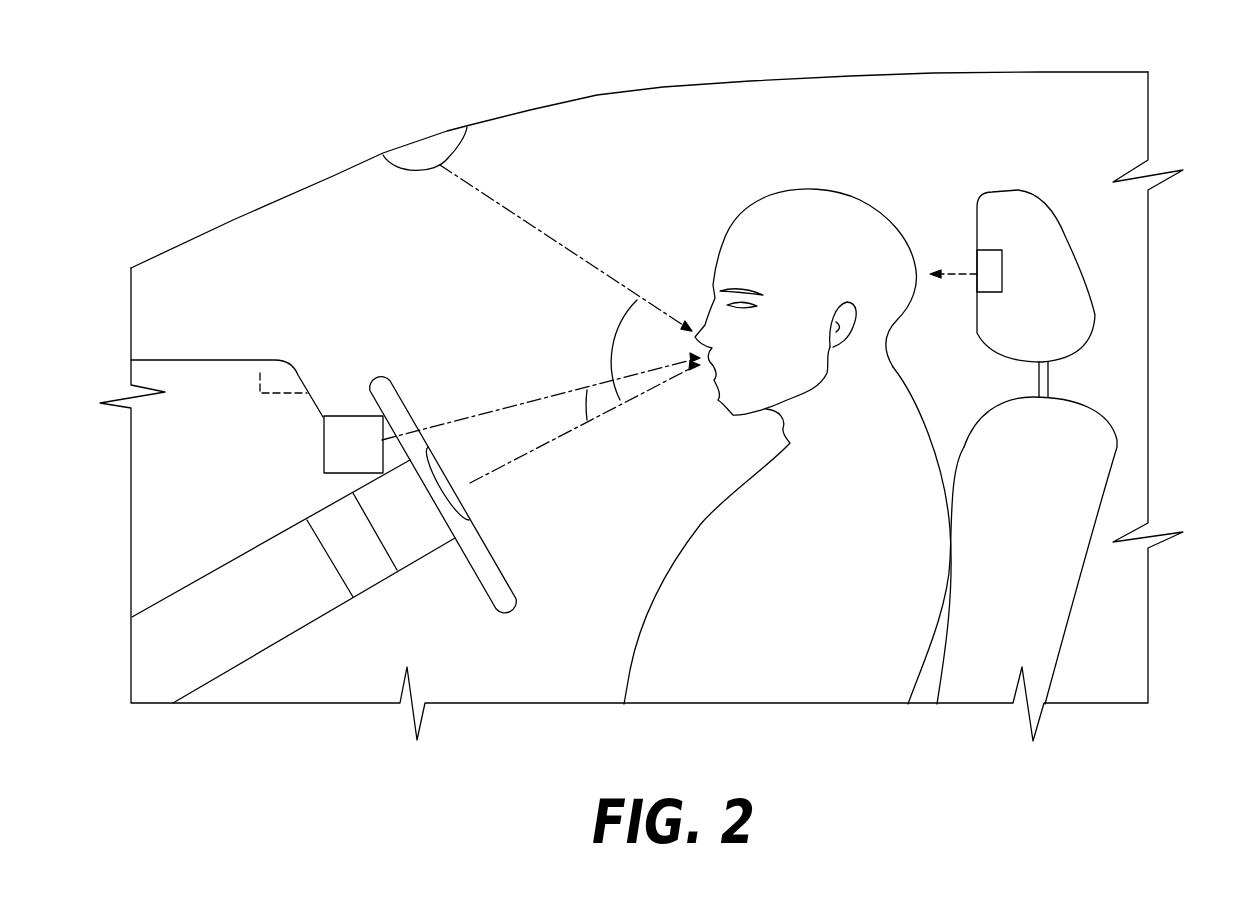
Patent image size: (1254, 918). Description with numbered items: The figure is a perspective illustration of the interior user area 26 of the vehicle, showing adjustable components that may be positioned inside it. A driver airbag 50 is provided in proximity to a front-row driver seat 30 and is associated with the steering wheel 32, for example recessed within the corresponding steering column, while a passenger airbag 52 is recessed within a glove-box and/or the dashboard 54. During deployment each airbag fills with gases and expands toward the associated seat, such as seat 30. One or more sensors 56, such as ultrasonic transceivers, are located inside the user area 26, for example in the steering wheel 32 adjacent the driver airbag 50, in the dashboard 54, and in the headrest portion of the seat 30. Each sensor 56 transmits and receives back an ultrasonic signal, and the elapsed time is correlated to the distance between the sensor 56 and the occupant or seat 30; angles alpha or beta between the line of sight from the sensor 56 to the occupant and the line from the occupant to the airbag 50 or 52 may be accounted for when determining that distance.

The user area 26 is at (882, 150).
The front-row driver seat 30 is at (1073, 487).
The steering wheel 32 is at (392, 407).
The driver airbag 50 is at (472, 498).
The passenger airbag 52 is at (294, 357).
The dashboard 54 is at (256, 360).
The sensors 56 is at (447, 142).